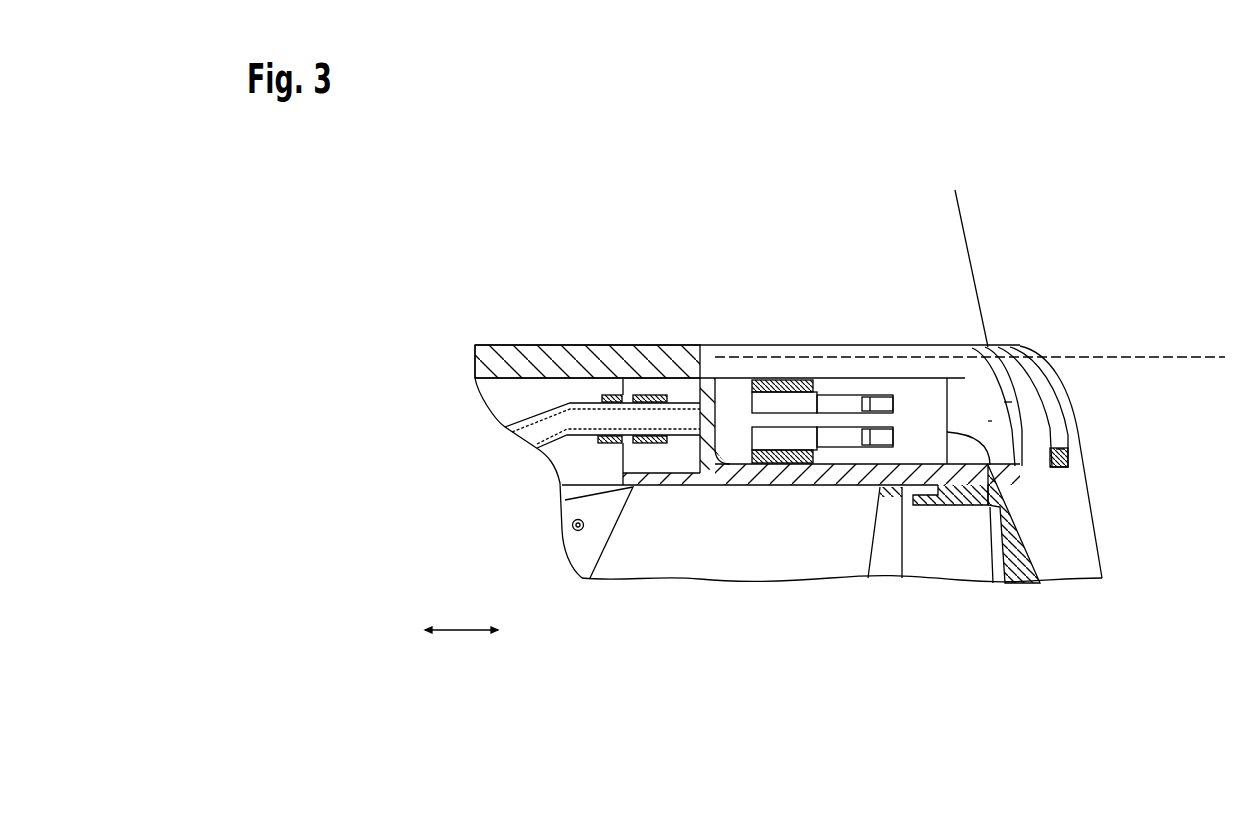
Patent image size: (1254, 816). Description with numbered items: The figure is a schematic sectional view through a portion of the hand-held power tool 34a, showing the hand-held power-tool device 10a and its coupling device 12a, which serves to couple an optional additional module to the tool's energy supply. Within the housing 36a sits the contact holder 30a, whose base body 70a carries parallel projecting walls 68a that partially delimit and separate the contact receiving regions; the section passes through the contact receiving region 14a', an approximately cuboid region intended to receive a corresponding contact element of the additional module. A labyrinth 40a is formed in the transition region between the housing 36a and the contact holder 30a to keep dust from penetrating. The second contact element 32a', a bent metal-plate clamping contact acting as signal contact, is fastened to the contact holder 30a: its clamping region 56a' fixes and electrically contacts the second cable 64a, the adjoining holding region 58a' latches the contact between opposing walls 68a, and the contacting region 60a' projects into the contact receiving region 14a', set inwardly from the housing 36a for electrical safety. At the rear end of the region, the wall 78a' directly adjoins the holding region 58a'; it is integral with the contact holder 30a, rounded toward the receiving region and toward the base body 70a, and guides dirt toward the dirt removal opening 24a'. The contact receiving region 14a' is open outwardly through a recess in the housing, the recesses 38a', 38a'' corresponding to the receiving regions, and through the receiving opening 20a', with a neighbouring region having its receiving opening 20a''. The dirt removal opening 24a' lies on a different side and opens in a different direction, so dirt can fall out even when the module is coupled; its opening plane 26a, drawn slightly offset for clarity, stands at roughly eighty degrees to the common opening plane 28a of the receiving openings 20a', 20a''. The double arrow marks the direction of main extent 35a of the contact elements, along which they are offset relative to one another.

The hand-held power-tool device 10a is at (818, 272).
The coupling device 12a is at (694, 258).
The contact receiving region 14a' is at (1099, 435).
The receiving opening 20a' is at (1107, 402).
The receiving opening 20a'' is at (1136, 471).
The dirt removal opening 24a' is at (729, 380).
The opening plane 26a is at (1183, 358).
The opening plane 28a is at (967, 236).
The contact holder 30a is at (793, 600).
The second contact element 32a' is at (782, 344).
The hand-held power tool 34a is at (406, 253).
The direction of main extent 35a is at (460, 632).
The housing 36a is at (503, 345).
The recess 38a' is at (999, 370).
The recess 38a'' is at (1054, 426).
The labyrinth 40a is at (943, 513).
The clamping region 56a' is at (631, 365).
The holding region 58a' is at (791, 375).
The contacting region 60a' is at (871, 367).
The second cable 64a is at (578, 418).
The wall 68a is at (988, 505).
The base body 70a is at (665, 555).
The wall 78a' is at (661, 386).